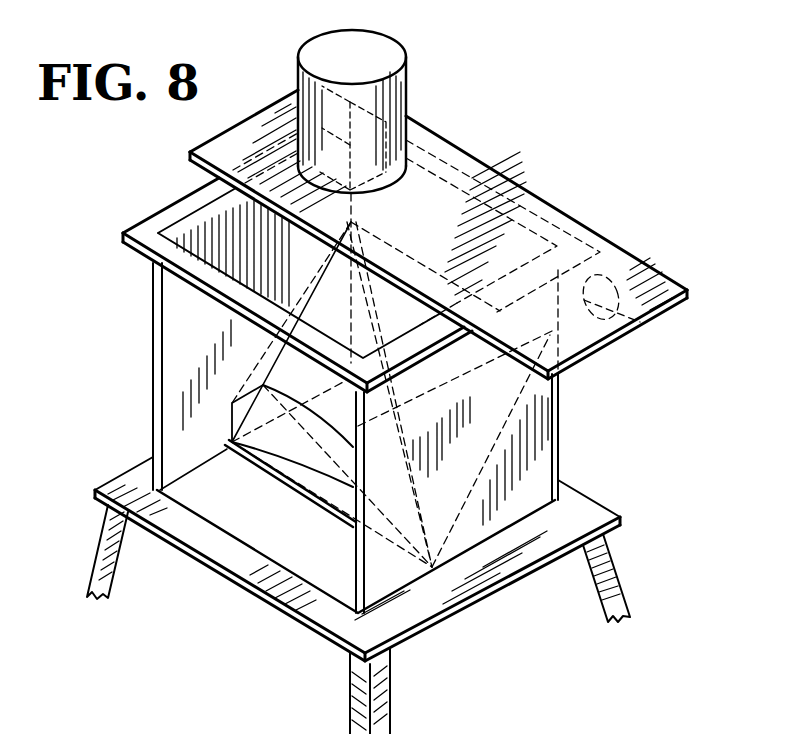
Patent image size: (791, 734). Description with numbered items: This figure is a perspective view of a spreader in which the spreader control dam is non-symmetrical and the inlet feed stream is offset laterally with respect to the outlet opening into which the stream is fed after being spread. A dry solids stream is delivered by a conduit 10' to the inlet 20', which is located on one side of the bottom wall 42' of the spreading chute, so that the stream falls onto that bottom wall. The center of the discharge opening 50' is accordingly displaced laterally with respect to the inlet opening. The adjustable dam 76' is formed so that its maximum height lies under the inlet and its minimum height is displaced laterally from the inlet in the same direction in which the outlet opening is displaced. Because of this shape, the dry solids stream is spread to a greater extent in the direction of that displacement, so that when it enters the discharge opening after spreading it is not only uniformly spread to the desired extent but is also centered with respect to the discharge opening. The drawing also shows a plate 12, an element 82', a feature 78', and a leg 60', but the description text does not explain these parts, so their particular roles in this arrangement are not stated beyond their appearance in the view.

The conduit 10' is at (391, 111).
The inlet 20' is at (416, 234).
The top plate 12 is at (633, 271).
The aperture hole 82' is at (645, 314).
The bottom wall of the spreading chute 42' is at (527, 458).
The discharge opening 50' is at (353, 595).
The adjustable dam 76' is at (290, 516).
The mirror and light path 78' is at (392, 428).
The leg 60' is at (652, 578).